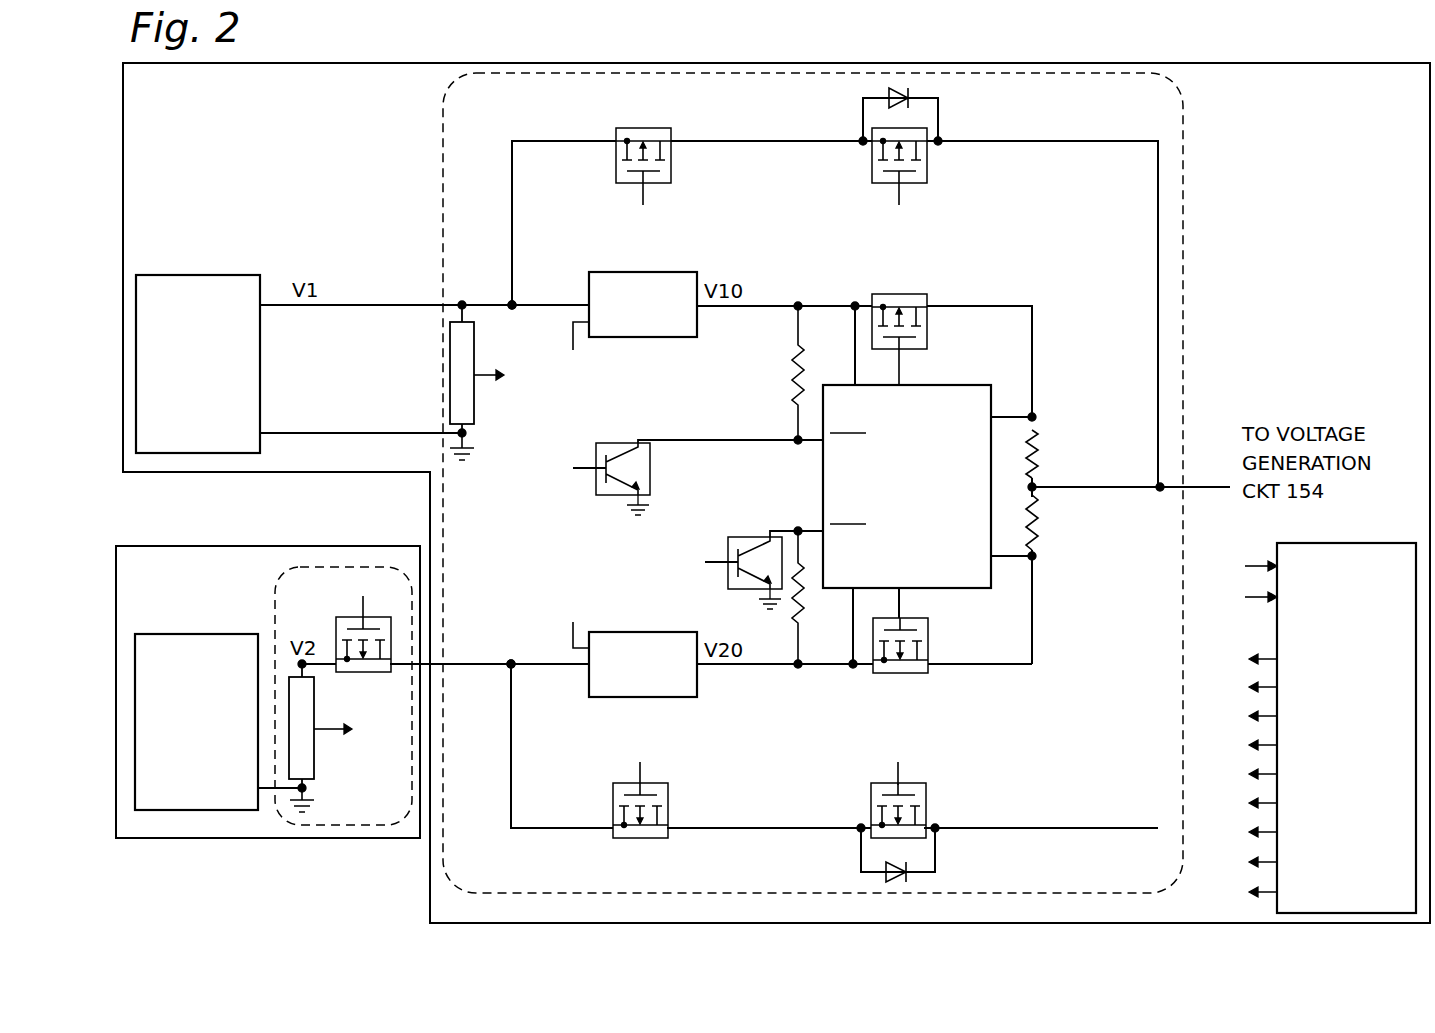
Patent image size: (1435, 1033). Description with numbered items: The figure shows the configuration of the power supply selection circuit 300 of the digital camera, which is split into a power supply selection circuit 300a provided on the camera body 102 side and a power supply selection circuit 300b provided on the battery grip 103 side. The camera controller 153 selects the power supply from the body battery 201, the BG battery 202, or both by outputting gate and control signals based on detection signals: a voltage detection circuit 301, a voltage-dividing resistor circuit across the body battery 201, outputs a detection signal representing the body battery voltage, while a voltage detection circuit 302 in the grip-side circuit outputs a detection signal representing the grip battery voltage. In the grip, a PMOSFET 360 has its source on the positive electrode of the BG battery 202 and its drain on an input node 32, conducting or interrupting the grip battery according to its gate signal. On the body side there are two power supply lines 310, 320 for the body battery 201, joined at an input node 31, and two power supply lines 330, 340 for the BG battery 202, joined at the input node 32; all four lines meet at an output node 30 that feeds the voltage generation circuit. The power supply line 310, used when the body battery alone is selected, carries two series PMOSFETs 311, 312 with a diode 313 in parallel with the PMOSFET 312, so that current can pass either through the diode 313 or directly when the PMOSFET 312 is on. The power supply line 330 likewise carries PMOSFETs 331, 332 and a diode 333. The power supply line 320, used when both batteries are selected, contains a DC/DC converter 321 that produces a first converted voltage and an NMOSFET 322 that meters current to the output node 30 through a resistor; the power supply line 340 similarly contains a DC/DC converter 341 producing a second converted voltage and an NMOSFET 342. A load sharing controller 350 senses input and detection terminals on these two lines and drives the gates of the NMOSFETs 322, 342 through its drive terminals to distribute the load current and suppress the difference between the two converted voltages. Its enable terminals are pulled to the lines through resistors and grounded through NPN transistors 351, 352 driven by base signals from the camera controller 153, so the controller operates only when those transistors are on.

The camera body 102 is at (1410, 108).
The battery grip 103 is at (170, 589).
The camera controller 153 is at (1360, 543).
The body battery 201 is at (224, 275).
The BG battery 202 is at (222, 634).
The output node 30 is at (1158, 485).
The input node 31 is at (512, 290).
The input node 32 is at (509, 660).
The power supply selection circuit 300 is at (713, 490).
The power supply selection circuit 300a is at (443, 880).
The power supply selection circuit 300b is at (370, 838).
The voltage detection circuit 301 is at (474, 398).
The voltage detection circuit 302 is at (316, 760).
The power supply line 310 is at (548, 160).
The PMOSFET 311 is at (660, 128).
The PMOSFET 312 is at (935, 183).
The diode 313 is at (915, 92).
The power supply line 320 is at (548, 318).
The DC/DC converter 321 is at (690, 272).
The NMOSFET 322 is at (920, 294).
The power supply line 330 is at (552, 842).
The PMOSFET 331 is at (668, 790).
The PMOSFET 332 is at (925, 788).
The diode 333 is at (912, 882).
The power supply line 340 is at (528, 676).
The DC/DC converter 341 is at (682, 697).
The NMOSFET 342 is at (918, 673).
The load sharing controller 350 is at (948, 385).
The NPN transistor 351 is at (626, 443).
The NPN transistor 352 is at (757, 537).
The PMOSFET 360 is at (338, 617).